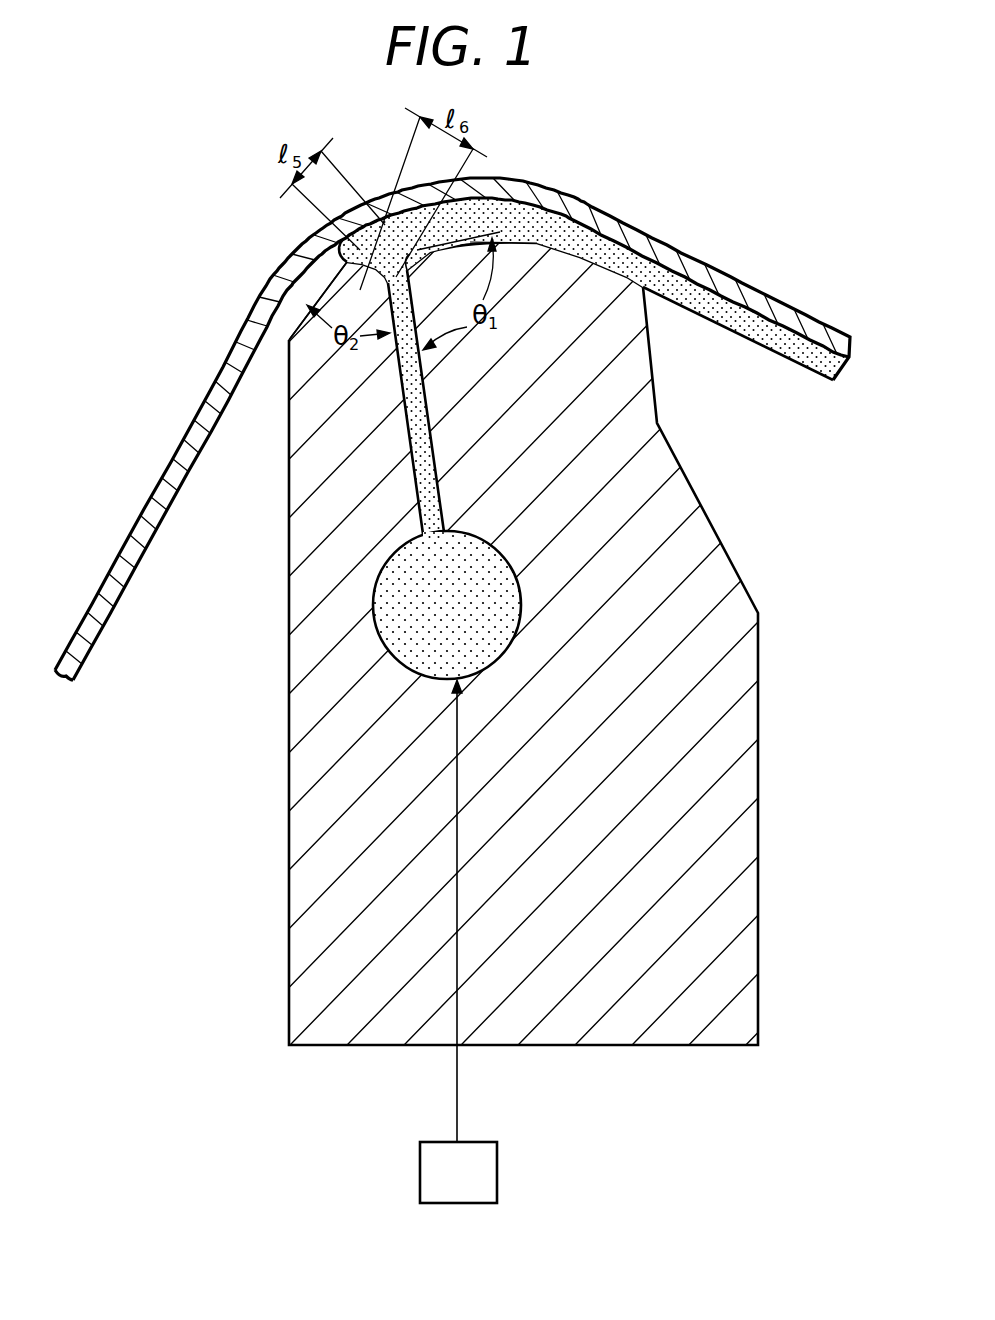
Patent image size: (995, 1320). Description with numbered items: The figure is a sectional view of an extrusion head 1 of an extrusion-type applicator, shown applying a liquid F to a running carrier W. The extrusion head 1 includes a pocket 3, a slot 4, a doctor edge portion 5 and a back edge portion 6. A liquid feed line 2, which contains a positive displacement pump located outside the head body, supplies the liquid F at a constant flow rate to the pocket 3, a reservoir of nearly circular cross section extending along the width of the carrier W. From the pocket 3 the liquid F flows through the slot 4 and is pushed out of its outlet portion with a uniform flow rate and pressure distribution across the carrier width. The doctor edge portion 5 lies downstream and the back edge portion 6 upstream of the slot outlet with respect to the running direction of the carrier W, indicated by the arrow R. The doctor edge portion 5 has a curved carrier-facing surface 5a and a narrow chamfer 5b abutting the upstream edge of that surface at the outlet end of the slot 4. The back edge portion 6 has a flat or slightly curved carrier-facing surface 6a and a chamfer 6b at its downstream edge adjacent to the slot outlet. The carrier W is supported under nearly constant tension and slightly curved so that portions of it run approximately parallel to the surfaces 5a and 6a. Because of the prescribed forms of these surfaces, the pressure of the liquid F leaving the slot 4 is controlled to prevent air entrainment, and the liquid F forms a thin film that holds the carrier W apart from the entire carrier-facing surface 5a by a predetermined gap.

The extrusion head 1 is at (722, 517).
The liquid feed line 2 is at (497, 1168).
The pocket 3 is at (497, 575).
The slot 4 is at (407, 410).
The doctor edge portion 5 is at (598, 277).
The carrier-facing surface of the doctor edge portion 5a is at (548, 247).
The chamfer of the doctor edge portion 5b is at (417, 250).
The back edge portion 6 is at (285, 282).
The carrier-facing surface of the back edge portion 6a is at (290, 328).
The chamfer of the back edge portion 6b is at (357, 243).
The carrier W is at (215, 376).
The arrow indicating carrier running direction R is at (705, 238).
The liquid F is at (747, 325).